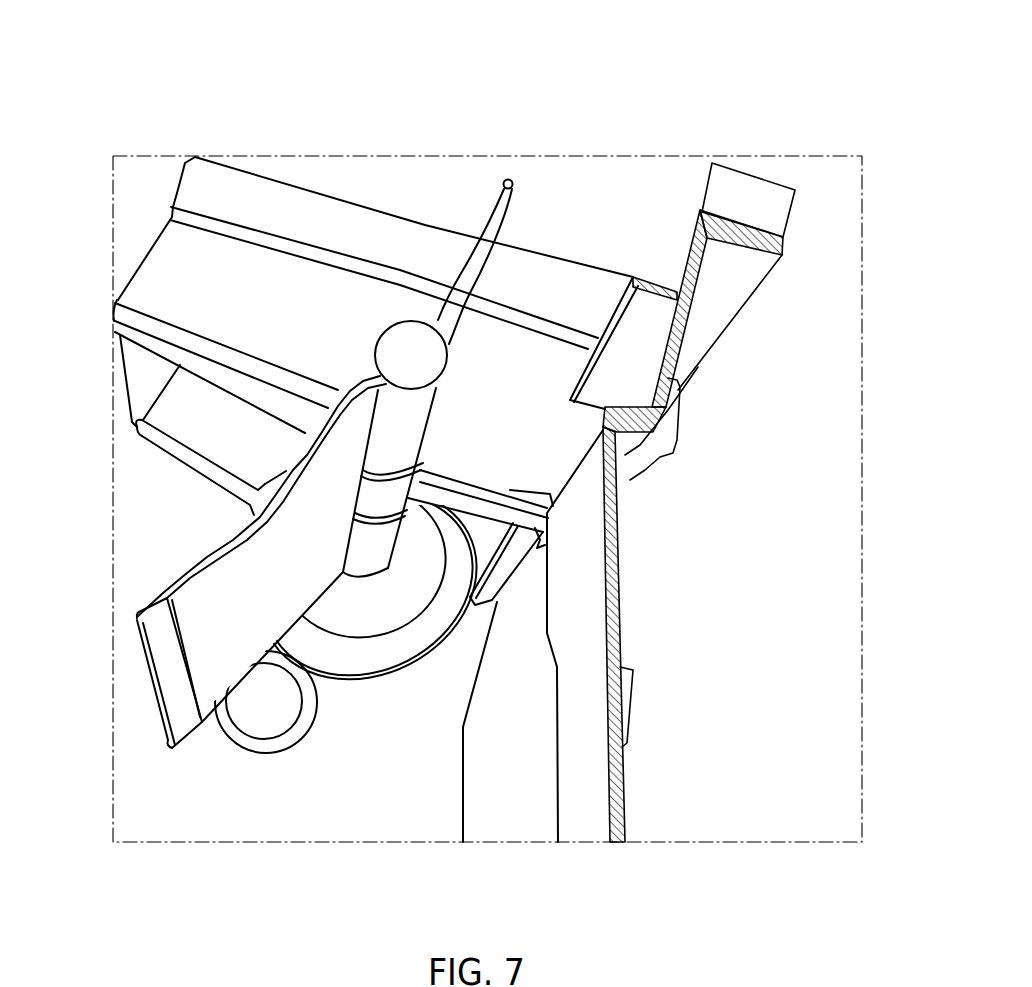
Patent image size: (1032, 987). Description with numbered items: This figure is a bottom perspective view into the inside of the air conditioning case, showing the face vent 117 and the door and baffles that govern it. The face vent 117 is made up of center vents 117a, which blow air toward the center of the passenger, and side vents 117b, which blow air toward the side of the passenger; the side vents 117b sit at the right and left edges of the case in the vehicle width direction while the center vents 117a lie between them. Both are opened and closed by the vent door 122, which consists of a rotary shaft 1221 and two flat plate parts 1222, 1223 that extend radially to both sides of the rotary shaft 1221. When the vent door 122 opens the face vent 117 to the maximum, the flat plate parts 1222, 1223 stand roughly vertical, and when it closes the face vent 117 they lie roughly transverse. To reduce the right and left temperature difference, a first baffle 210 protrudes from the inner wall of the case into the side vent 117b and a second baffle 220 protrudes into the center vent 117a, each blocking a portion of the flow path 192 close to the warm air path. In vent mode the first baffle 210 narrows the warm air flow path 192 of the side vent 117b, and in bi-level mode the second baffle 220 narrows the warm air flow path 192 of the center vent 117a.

The face vent 117 is at (326, 299).
The center vent 117a is at (215, 292).
The side vent 117b is at (216, 437).
The vent door 122 is at (188, 742).
The rotary shaft 1221 is at (403, 343).
The flat plate part 1222 is at (472, 262).
The flat plate part 1223 is at (266, 612).
The flow path 192 is at (527, 412).
The second baffle 220 is at (657, 273).
The first baffle 210 is at (503, 560).